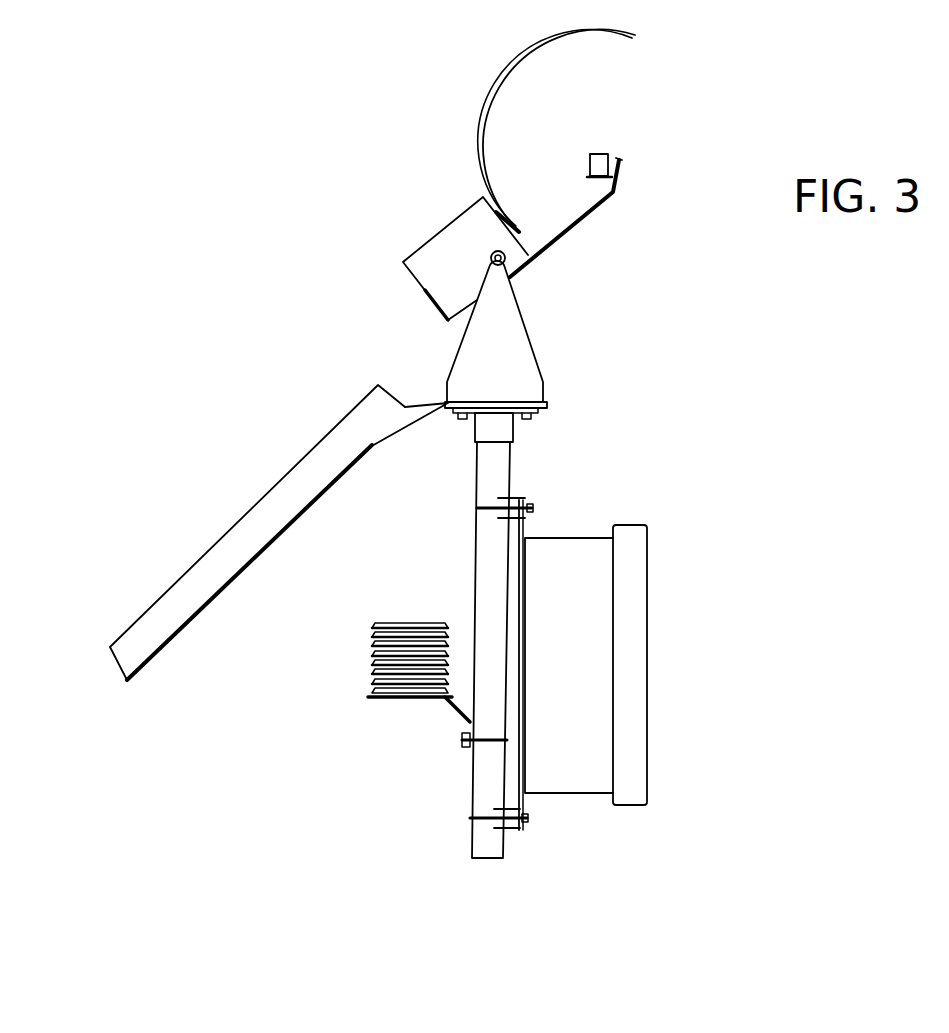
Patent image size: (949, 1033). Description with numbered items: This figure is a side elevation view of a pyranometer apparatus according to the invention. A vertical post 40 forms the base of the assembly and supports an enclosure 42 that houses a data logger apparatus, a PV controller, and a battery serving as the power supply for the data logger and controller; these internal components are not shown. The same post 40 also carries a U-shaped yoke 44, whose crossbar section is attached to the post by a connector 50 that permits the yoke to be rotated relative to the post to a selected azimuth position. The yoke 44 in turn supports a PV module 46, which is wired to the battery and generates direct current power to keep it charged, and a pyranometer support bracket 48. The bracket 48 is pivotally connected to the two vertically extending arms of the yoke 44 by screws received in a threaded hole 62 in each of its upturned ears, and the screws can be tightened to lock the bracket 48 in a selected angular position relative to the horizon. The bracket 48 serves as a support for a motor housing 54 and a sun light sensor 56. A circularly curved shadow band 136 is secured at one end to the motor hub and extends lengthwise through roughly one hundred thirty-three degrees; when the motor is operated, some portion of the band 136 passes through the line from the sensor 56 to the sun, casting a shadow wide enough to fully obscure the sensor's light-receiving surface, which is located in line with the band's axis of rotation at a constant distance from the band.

The shadow band 136 is at (490, 88).
The sun light sensor 56 is at (601, 153).
The pyranometer support bracket 48 is at (582, 217).
The motor housing 54 is at (443, 253).
The threaded hole 62 is at (513, 266).
The U-shaped yoke 44 is at (535, 352).
The connector 50 is at (513, 433).
The PV module 46 is at (272, 487).
The vertical post 40 is at (497, 570).
The enclosure 42 is at (572, 537).